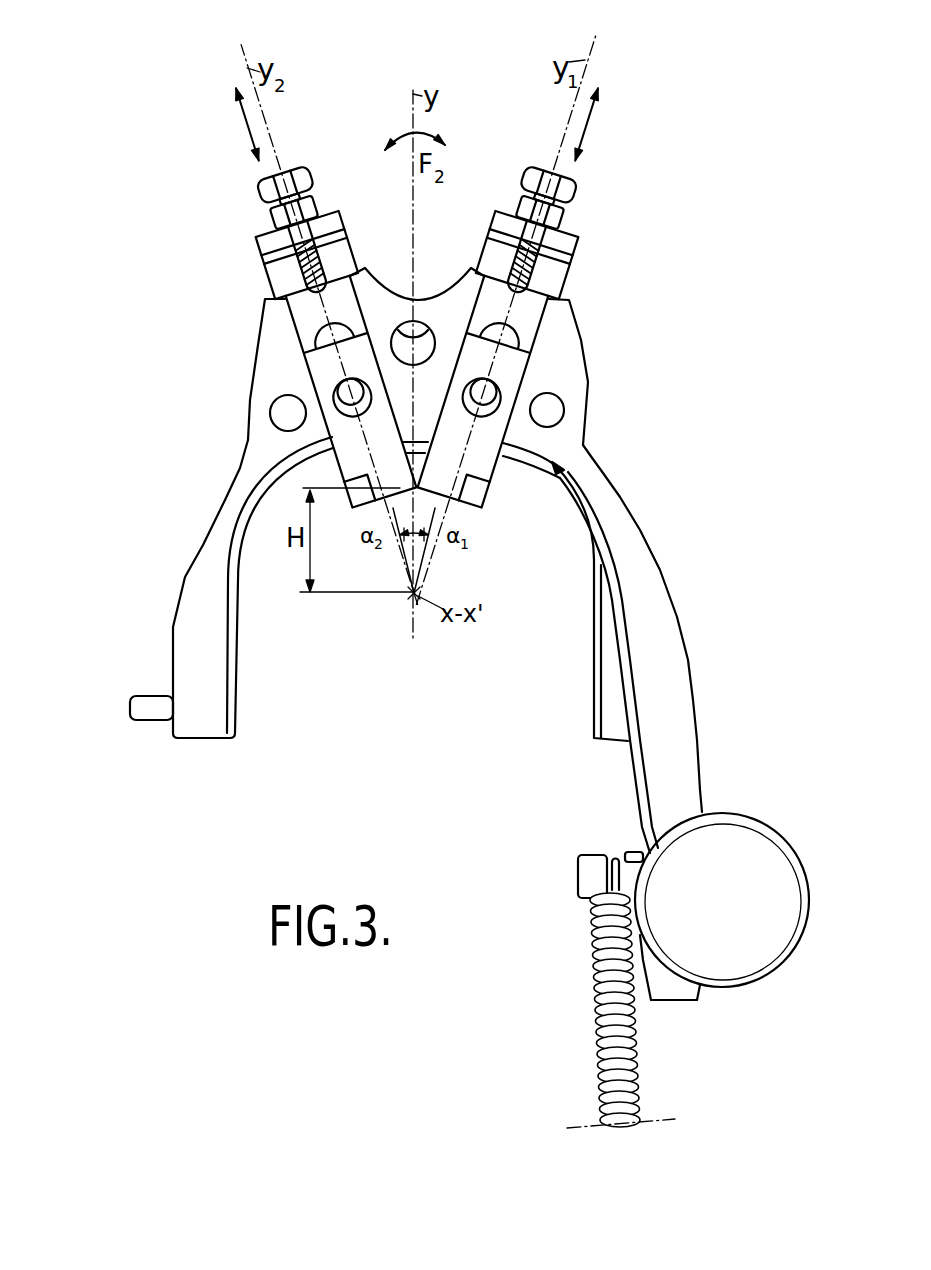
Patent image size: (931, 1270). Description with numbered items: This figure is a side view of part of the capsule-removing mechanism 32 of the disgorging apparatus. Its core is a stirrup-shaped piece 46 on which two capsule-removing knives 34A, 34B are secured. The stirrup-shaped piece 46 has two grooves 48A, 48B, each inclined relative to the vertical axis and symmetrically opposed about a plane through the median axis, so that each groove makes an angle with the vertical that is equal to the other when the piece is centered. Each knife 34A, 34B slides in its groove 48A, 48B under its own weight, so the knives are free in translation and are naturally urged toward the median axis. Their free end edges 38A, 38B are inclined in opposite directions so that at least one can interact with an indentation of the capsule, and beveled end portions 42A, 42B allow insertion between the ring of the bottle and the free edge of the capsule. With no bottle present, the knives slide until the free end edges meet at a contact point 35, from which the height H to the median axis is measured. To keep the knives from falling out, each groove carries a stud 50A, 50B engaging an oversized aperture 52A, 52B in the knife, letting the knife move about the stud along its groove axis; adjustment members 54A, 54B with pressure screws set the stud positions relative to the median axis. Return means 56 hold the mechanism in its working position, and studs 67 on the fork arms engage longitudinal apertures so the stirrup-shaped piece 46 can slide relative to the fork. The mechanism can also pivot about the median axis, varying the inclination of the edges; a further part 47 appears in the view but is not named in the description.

The capsule-removing mechanism 32 is at (596, 340).
The capsule-removing knife 34A is at (498, 426).
The capsule-removing knife 34B is at (345, 436).
The contact point 35 is at (442, 510).
The free end edge 38A is at (472, 508).
The free end edge 38B is at (367, 508).
The end portion 42A is at (476, 492).
The end portion 42B is at (340, 473).
The stirrup-shaped piece 46 is at (273, 352).
The caliper arm 47 is at (190, 632).
The groove 48A is at (528, 308).
The groove 48B is at (310, 310).
The stud 50A is at (501, 389).
The stud 50B is at (333, 391).
The aperture 52A is at (506, 403).
The aperture 52B is at (330, 403).
The adjustment member 54A is at (546, 178).
The adjustment member 54B is at (322, 157).
The return means 56 is at (612, 1052).
The stud 67 is at (145, 708).